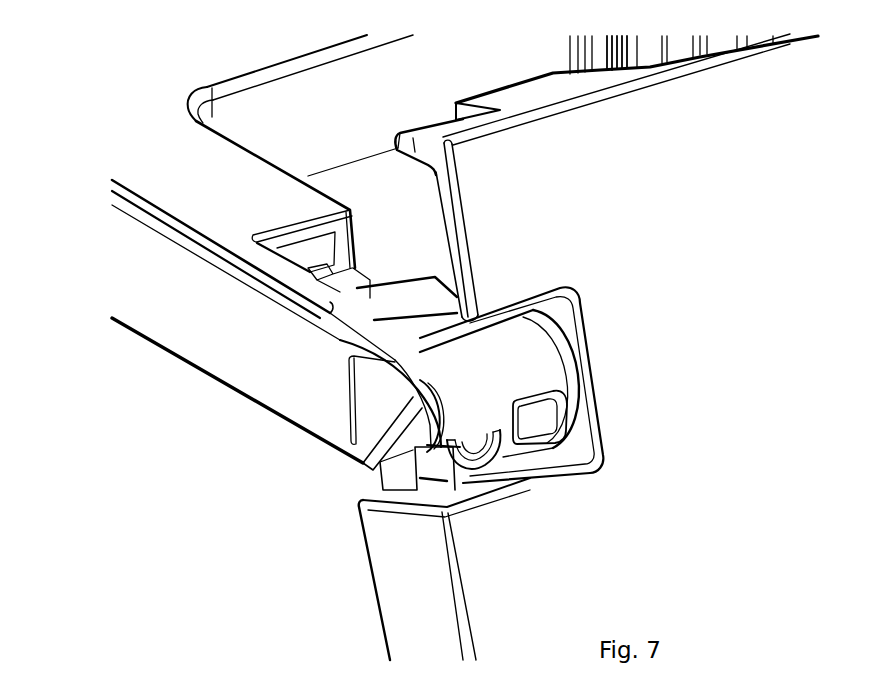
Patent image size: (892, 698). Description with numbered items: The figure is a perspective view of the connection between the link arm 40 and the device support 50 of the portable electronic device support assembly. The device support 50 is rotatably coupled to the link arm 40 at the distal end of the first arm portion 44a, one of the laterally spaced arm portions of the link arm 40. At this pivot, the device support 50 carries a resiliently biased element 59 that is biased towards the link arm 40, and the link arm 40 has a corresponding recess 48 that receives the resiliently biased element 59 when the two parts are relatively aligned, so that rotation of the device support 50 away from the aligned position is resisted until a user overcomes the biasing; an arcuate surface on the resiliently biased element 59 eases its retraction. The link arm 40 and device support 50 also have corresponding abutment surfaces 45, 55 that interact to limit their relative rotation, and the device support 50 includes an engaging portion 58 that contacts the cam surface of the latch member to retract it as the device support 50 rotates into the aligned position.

The link arm 40 is at (153, 277).
The first arm portion 44a is at (172, 327).
The abutment surface 45 is at (360, 458).
The abutment surface 55 is at (380, 470).
The engaging portion 58 is at (408, 137).
The device support 50 is at (800, 235).
The recess 48 is at (548, 417).
The resiliently biased element 59 is at (503, 467).